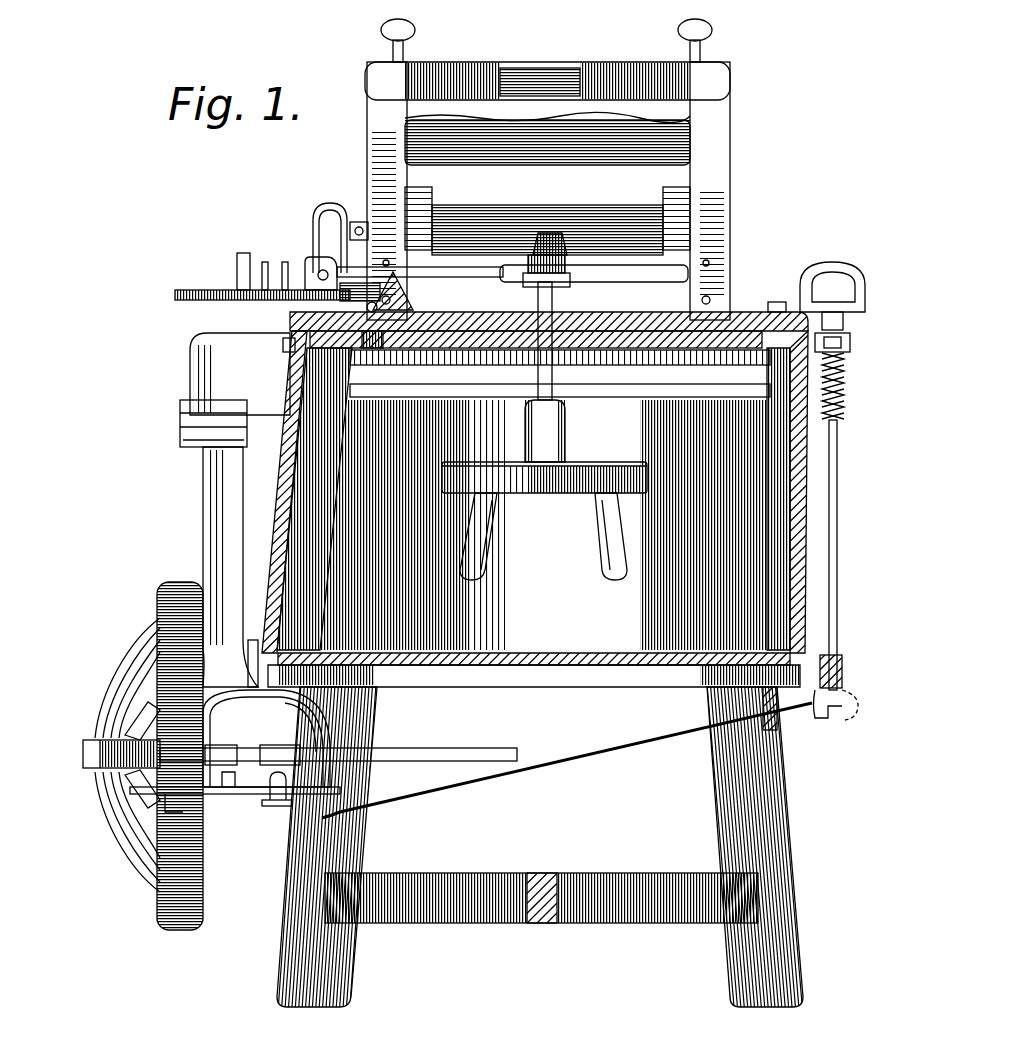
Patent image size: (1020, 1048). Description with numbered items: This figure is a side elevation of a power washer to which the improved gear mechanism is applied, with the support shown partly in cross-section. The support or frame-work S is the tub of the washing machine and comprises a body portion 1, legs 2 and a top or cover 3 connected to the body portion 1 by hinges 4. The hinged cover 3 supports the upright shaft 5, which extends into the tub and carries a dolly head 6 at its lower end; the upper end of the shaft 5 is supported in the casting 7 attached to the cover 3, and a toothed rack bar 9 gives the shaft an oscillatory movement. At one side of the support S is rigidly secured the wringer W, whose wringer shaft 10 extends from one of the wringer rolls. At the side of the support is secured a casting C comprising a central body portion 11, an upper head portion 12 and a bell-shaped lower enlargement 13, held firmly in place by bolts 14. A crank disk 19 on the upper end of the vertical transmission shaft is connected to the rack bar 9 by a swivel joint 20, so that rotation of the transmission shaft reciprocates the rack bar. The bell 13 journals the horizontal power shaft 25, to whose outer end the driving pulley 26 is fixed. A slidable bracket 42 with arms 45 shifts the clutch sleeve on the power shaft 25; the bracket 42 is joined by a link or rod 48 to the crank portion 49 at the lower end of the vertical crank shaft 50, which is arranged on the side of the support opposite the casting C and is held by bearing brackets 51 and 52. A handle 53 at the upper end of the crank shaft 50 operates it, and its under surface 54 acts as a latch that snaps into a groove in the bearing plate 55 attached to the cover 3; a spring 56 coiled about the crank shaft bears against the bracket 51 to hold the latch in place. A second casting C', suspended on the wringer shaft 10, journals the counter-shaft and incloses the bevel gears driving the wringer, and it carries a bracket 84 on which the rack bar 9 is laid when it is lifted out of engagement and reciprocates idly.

The wringer W is at (707, 157).
The body portion 1 is at (790, 482).
The legs 2 is at (727, 804).
The top or cover 3 is at (738, 320).
The hinges 4 is at (372, 302).
The upright shaft 5 is at (558, 375).
The dolly head 6 is at (525, 482).
The casting 7 is at (552, 240).
The toothed rack bar 9 is at (650, 279).
The wringer shaft 10 is at (368, 224).
The central body portion 11 is at (215, 532).
The upper head portion 12 is at (222, 368).
The lower enlargement 13 is at (266, 738).
The bolts 14 is at (250, 337).
The crank disk 19 is at (195, 290).
The swivel joint 20 is at (340, 352).
The power shaft 25 is at (445, 748).
The driving pulley 26 is at (149, 756).
The bracket 42 is at (266, 806).
The arms 45 is at (210, 797).
The link or rod 48 is at (548, 765).
The crank portion 49 is at (815, 720).
The vertical crank shaft 50 is at (840, 560).
The bearing bracket 51 is at (850, 343).
The bearing bracket 52 is at (840, 655).
The handle 53 is at (826, 262).
The under surface 54 is at (845, 318).
The bearing plate 55 is at (785, 300).
The spring 56 is at (845, 390).
The bracket 84 is at (243, 253).
The casting C is at (193, 428).
The casting C' is at (324, 258).
The support or frame-work S is at (275, 480).